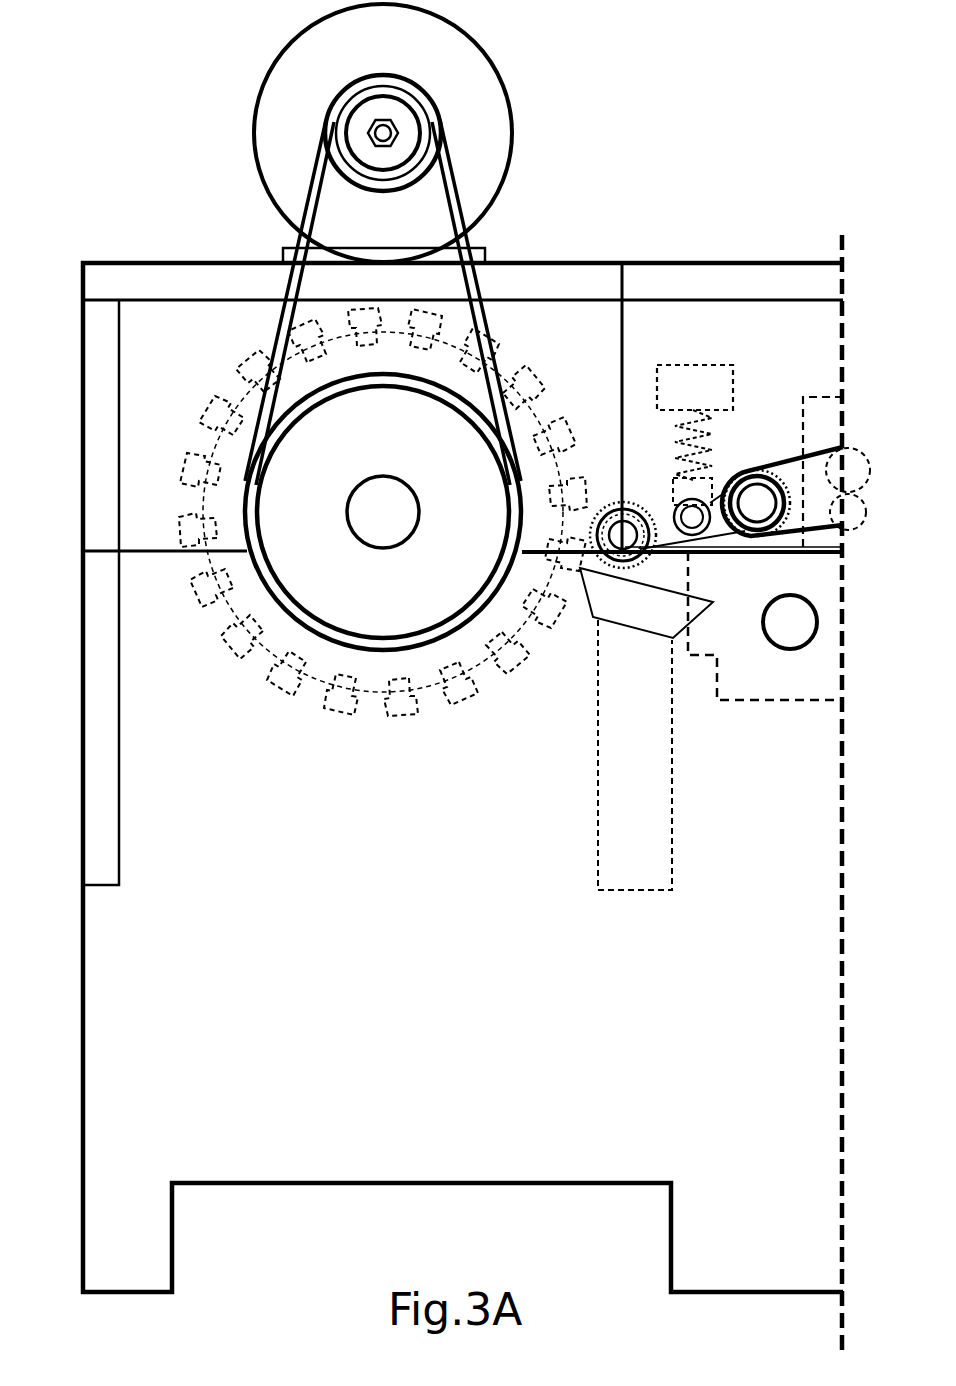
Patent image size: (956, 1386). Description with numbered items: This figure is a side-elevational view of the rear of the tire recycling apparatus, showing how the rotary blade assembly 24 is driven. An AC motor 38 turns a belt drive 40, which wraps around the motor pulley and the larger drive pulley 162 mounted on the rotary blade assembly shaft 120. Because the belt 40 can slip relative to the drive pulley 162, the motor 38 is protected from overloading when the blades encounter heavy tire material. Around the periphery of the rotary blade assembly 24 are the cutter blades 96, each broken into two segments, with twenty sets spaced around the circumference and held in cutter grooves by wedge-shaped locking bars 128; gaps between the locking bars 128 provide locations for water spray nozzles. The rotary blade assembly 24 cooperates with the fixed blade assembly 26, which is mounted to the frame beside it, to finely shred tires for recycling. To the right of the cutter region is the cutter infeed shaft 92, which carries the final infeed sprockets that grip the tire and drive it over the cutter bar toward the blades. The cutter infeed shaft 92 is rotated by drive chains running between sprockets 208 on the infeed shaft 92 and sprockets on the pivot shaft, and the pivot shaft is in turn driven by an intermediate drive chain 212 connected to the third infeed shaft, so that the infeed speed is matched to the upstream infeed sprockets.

The AC motor 38 is at (512, 133).
The belt drive 40 is at (487, 315).
The drive pulley 162 is at (472, 627).
The rotary blade assembly 24 is at (313, 688).
The rotary blade assembly shaft 120 is at (258, 657).
The wedge-shaped locking bars 128 is at (412, 703).
The cutter blades 96 is at (447, 707).
The fixed blade assembly 26 is at (586, 588).
The cutter infeed shaft 92 is at (773, 537).
The sprockets 208 is at (793, 477).
The intermediate drive chain 212 is at (810, 460).